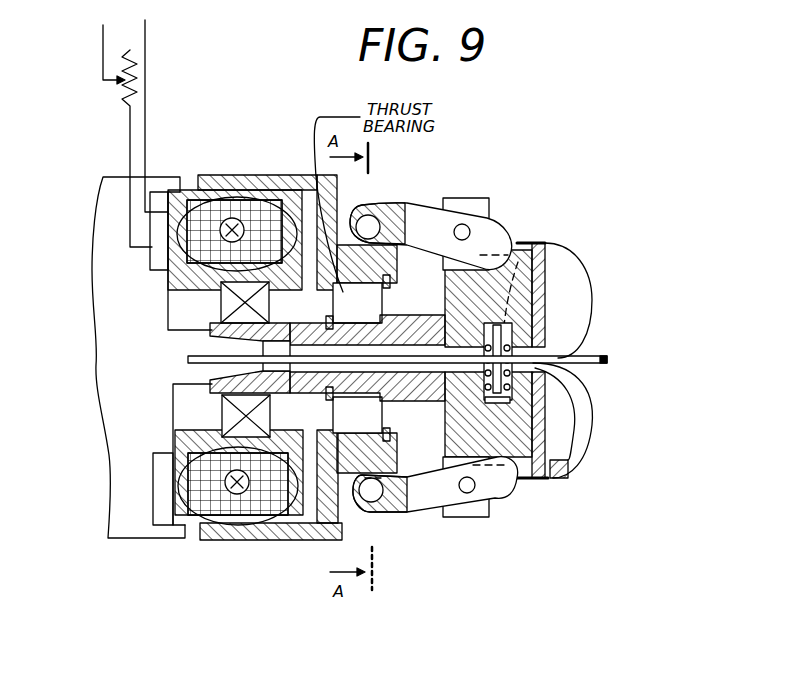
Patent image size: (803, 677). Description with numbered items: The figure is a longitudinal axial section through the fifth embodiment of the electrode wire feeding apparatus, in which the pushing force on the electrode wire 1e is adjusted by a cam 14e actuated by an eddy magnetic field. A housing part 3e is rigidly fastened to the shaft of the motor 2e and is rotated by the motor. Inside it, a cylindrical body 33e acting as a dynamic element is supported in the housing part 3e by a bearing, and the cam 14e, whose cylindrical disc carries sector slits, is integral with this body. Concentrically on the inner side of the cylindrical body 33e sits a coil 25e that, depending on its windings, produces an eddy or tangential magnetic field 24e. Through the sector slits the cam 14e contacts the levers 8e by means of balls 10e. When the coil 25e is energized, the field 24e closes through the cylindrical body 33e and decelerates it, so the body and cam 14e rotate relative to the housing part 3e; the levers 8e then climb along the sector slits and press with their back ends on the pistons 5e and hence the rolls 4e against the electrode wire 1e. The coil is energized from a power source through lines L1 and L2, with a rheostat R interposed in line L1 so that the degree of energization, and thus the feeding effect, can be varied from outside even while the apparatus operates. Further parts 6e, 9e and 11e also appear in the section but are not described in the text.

The electrode wire 1e is at (604, 358).
The motor 2e is at (118, 430).
The housing part 3e is at (450, 298).
The rolls 4e is at (587, 420).
The pistons 5e is at (530, 284).
The bushing 6e is at (226, 340).
The levers 8e is at (421, 207).
The pivot pin 9e is at (467, 226).
The balls 10e is at (370, 222).
The spring 11e is at (530, 412).
The cam 14e is at (333, 528).
The magnetic field 24e is at (248, 190).
The coil 25e is at (272, 512).
The cylindrical body 33e is at (208, 176).
The line L1 is at (103, 60).
The line L2 is at (145, 47).
The rheostat R is at (125, 92).